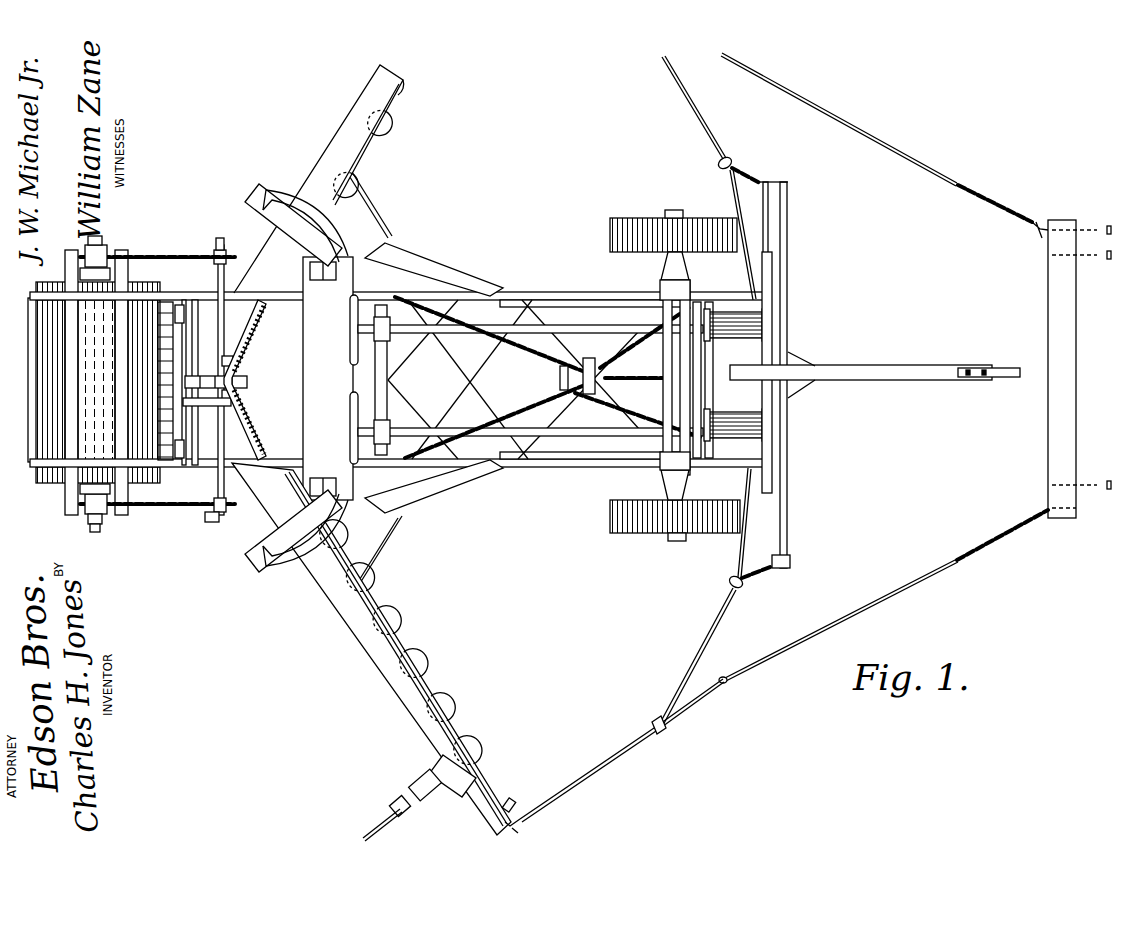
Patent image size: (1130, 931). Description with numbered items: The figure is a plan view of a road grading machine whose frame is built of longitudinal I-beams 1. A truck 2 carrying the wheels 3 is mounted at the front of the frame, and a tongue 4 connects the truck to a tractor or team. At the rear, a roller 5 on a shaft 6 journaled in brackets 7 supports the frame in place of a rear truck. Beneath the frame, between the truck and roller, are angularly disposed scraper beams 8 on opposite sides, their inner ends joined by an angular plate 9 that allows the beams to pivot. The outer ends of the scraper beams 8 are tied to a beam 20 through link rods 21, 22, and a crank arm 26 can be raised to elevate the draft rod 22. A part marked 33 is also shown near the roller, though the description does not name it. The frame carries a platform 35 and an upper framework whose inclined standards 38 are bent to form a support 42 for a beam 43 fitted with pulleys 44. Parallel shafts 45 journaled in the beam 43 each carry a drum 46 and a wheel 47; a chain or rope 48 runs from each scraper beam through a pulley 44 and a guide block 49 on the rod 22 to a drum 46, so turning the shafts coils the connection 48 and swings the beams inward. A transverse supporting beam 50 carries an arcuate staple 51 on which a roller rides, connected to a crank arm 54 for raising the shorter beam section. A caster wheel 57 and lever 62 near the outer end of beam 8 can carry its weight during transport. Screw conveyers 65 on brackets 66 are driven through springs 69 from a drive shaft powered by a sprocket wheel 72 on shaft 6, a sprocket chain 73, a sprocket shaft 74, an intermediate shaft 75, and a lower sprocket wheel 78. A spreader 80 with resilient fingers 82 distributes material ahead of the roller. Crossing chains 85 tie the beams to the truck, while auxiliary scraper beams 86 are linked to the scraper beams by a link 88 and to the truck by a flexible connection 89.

The longitudinal beams 1 is at (520, 293).
The truck 2 is at (662, 352).
The wheels 3 is at (695, 222).
The tongue 4 is at (890, 368).
The roller 5 is at (42, 431).
The shaft 6 is at (90, 514).
The brackets 7 is at (118, 275).
The scraper beam 8 is at (371, 450).
The angular plate 9 is at (245, 410).
The beam 20 is at (1048, 308).
The link rod 21 is at (890, 592).
The link rod 22 is at (690, 704).
The crank arm 26 is at (518, 828).
The drum head 33 is at (33, 380).
The platform 35 is at (410, 255).
The inclined standards 38 is at (908, 158).
The support 42 is at (773, 468).
The beam 43 is at (791, 512).
The pulleys 44 is at (718, 165).
The shafts 45 is at (442, 331).
The drum 46 is at (732, 413).
The wheel 47 is at (387, 387).
The flexible connection 48 is at (706, 126).
The guide block 49 is at (650, 722).
The transverse supporting beam 50 is at (255, 560).
The arcuate staple 51 is at (290, 192).
The crank arm 54 is at (342, 257).
The caster wheel 57 is at (405, 813).
The lever 62 is at (370, 830).
The screws 65 is at (422, 660).
The brackets 66 is at (510, 800).
The springs 69 is at (234, 360).
The sprocket wheel 72 is at (88, 528).
The sprocket chain 73 is at (170, 508).
The sprocket shaft 74 is at (210, 522).
The intermediate shaft 75 is at (213, 470).
The lower sprocket wheel 78 is at (248, 381).
The spreader 80 is at (133, 353).
The resilient fingers 82 is at (163, 383).
The chains 85 is at (508, 406).
The auxiliary scraper beams 86 is at (445, 280).
The link 88 is at (364, 193).
The flexible connection 89 is at (598, 380).